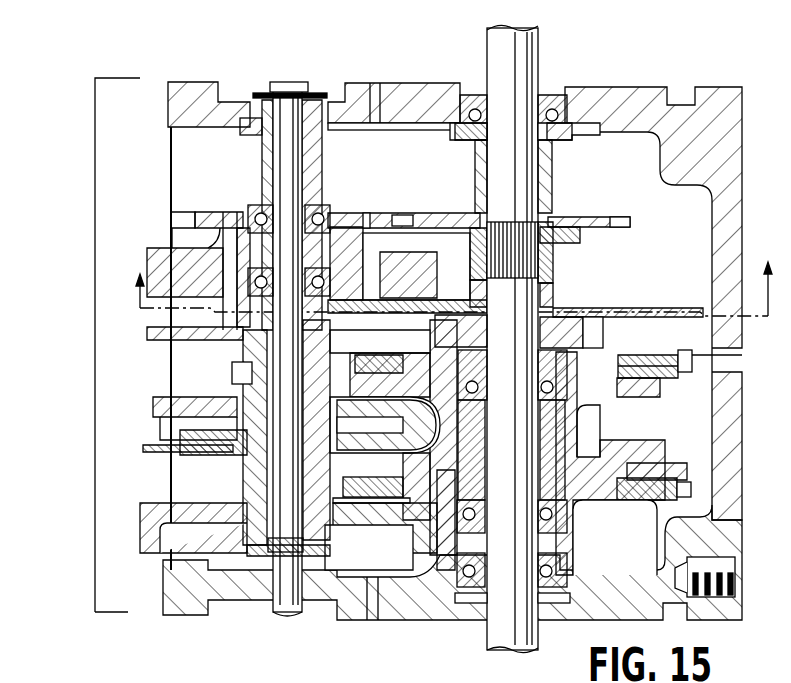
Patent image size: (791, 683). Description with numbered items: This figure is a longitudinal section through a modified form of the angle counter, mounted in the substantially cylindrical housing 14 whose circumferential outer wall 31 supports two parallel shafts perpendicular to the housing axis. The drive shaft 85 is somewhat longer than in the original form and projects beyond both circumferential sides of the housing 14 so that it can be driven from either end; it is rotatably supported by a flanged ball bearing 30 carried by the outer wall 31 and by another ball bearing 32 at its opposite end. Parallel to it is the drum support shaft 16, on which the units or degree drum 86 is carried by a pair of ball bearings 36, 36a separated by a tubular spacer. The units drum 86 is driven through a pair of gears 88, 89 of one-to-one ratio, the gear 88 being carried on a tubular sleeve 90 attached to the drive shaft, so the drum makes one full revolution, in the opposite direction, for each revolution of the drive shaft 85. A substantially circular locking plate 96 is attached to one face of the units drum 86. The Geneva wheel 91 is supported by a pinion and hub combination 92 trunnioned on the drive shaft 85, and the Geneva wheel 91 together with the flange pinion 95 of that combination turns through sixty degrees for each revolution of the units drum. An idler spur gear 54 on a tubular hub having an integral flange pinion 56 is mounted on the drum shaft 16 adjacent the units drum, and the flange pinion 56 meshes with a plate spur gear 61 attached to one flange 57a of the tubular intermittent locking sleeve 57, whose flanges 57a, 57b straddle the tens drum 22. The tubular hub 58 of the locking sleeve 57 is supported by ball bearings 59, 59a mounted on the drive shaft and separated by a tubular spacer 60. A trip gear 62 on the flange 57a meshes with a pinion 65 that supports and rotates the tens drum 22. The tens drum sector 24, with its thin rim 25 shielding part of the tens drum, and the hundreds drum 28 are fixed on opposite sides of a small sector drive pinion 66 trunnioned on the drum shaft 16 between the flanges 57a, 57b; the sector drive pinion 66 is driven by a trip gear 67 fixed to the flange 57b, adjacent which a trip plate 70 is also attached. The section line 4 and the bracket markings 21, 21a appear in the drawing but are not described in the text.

The housing 14 is at (738, 164).
The drum support shaft 16 is at (283, 618).
The unit 21 is at (95, 336).
The unit lower part 21a is at (83, 613).
The tens drum 22 is at (158, 404).
The tens drum sector 24 is at (183, 451).
The rim 25 is at (458, 432).
The hundreds drum 28 is at (150, 541).
The flanged ball bearing 30 is at (556, 138).
The circumferential outer wall 31 is at (400, 86).
The ball bearing 32 is at (563, 571).
The ball bearing 36 is at (321, 286).
The ball bearing 36a is at (258, 212).
The section line 4 is at (455, 293).
The idler spur gear 54 is at (162, 338).
The flange pinion 56 is at (236, 380).
The tubular intermittent locking sleeve 57 is at (585, 462).
The flange 57a is at (640, 397).
The flange 57b is at (641, 468).
The tubular hub 58 is at (579, 430).
The ball bearing 59 is at (480, 393).
The ball bearing 59a is at (473, 524).
The tubular spacer 60 is at (472, 463).
The plate spur gear 61 is at (672, 357).
The trip gear 62 is at (667, 377).
The pinion 65 is at (241, 387).
The sector drive pinion 66 is at (233, 460).
The trip gear 67 is at (668, 491).
The trip plate 70 is at (628, 498).
The drive shaft 85 is at (518, 66).
The units or degree drum 86 is at (152, 262).
The gear 88 is at (600, 222).
The gear 89 is at (352, 213).
The tubular sleeve 90 is at (556, 260).
The Geneva wheel 91 is at (645, 310).
The pinion and hub combination 92 is at (553, 290).
The flange pinion 95 is at (603, 336).
The locking plate 96 is at (232, 309).